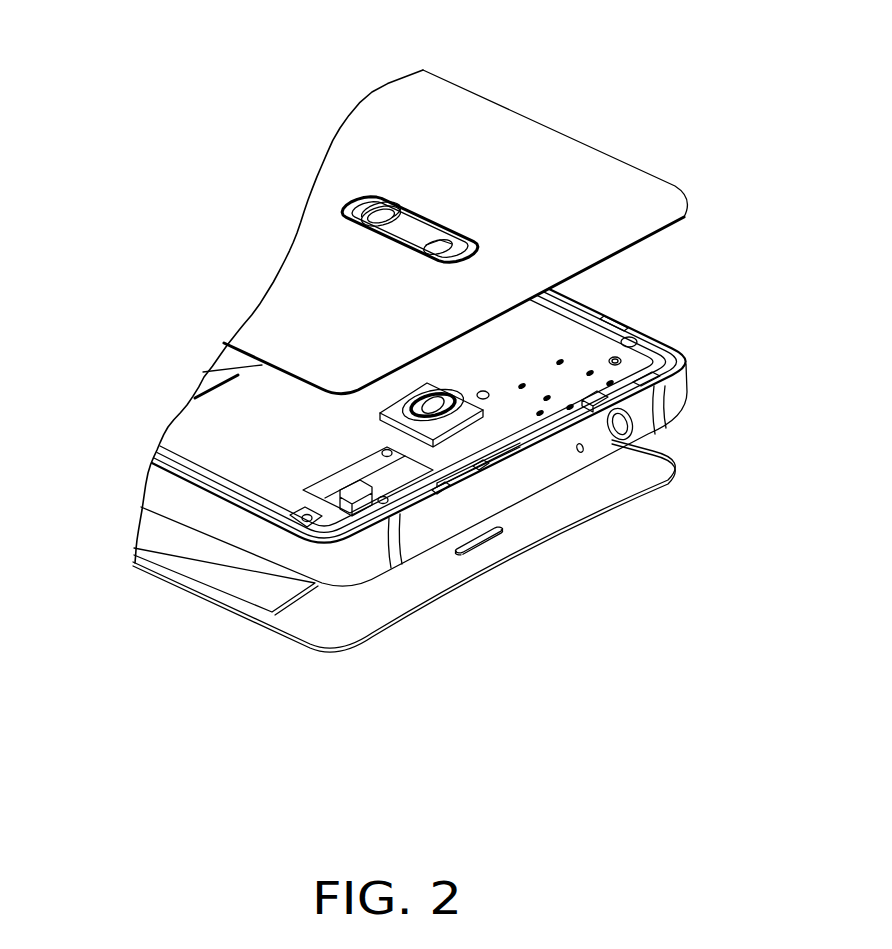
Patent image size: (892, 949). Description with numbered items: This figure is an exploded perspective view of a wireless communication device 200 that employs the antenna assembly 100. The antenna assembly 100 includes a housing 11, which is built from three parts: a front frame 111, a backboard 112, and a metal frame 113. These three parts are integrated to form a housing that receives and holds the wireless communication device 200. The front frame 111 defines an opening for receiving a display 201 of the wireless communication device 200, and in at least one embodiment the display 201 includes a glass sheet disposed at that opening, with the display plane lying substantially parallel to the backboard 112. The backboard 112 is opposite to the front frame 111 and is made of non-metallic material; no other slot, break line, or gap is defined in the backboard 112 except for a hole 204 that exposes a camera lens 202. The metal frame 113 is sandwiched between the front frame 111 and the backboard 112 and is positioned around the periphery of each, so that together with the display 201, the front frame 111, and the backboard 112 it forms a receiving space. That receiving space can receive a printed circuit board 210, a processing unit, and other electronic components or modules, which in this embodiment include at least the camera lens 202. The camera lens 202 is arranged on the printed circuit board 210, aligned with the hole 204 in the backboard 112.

The antenna assembly 100 is at (657, 520).
The housing 11 is at (763, 332).
The front frame 111 is at (655, 485).
The backboard 112 is at (638, 220).
The metal frame 113 is at (678, 393).
The wireless communication device 200 is at (395, 34).
The display 201 is at (220, 568).
The camera lens 202 is at (452, 413).
The hole 204 is at (465, 225).
The printed circuit board 210 is at (213, 445).